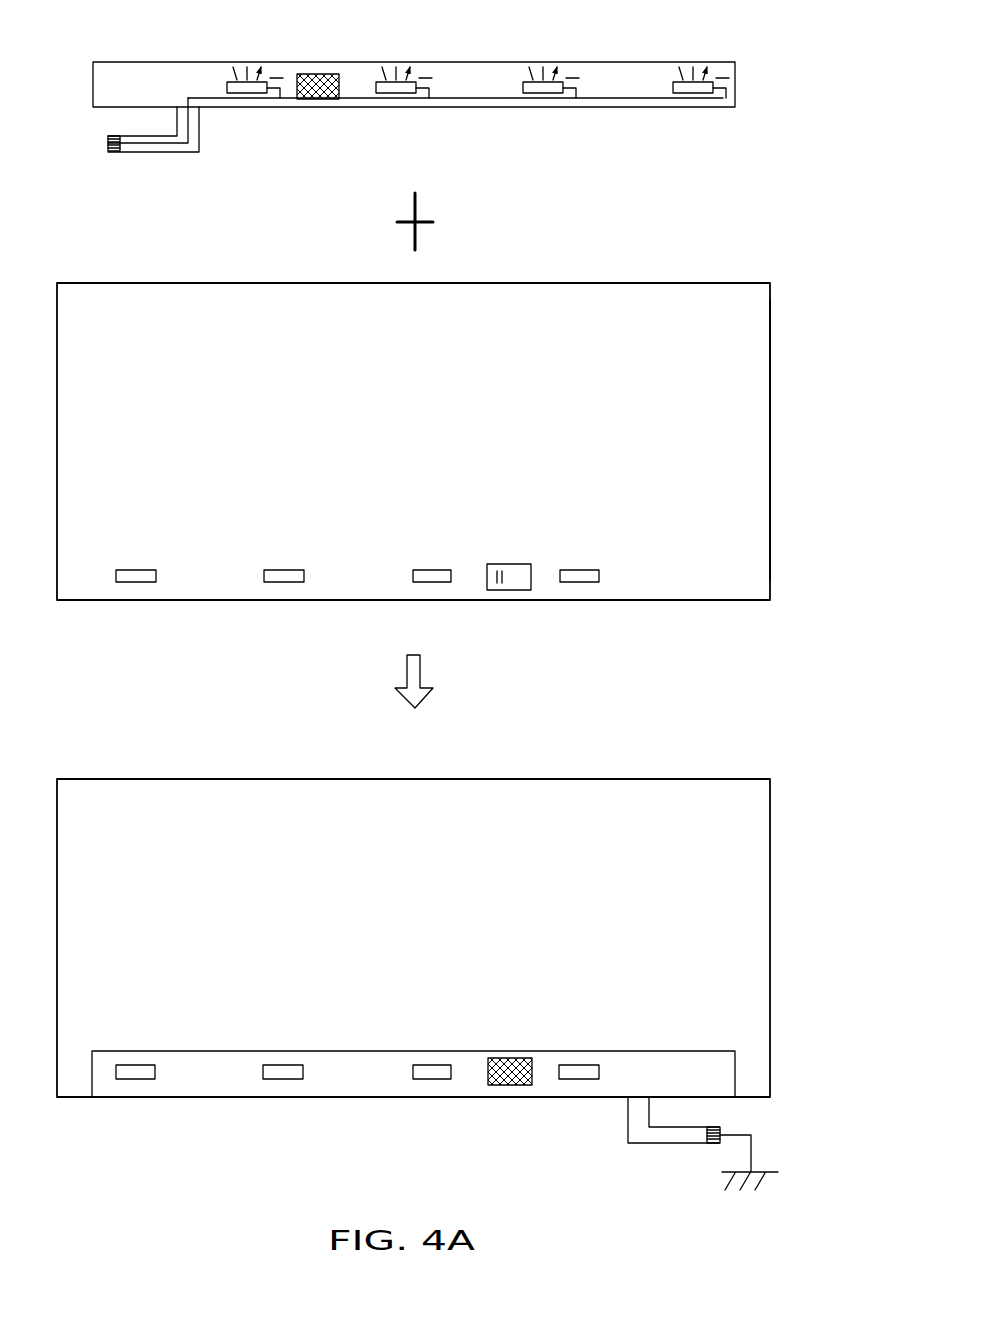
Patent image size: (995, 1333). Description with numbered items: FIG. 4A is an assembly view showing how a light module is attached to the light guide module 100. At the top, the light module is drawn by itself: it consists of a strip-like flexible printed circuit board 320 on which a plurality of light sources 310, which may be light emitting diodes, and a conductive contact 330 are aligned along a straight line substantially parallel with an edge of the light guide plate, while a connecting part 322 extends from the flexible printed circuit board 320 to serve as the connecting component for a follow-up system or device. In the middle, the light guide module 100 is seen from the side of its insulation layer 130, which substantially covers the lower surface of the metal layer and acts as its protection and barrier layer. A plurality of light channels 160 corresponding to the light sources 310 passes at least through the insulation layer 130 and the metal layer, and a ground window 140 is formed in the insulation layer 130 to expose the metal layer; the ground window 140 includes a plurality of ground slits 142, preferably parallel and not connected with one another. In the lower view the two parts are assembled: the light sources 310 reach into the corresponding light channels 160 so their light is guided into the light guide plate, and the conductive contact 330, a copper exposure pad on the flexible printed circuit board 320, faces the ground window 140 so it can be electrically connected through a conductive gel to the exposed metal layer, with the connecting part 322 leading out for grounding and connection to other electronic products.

The light guide module 100 is at (754, 272).
The insulation layer 130 is at (758, 428).
The ground window 140 is at (523, 590).
The ground slits 142 is at (502, 583).
The light channels 160 is at (142, 582).
The light sources 310 is at (687, 93).
The flexible printed circuit board 320 is at (103, 86).
The connecting part 322 is at (108, 147).
The conductive contact 330 is at (316, 76).